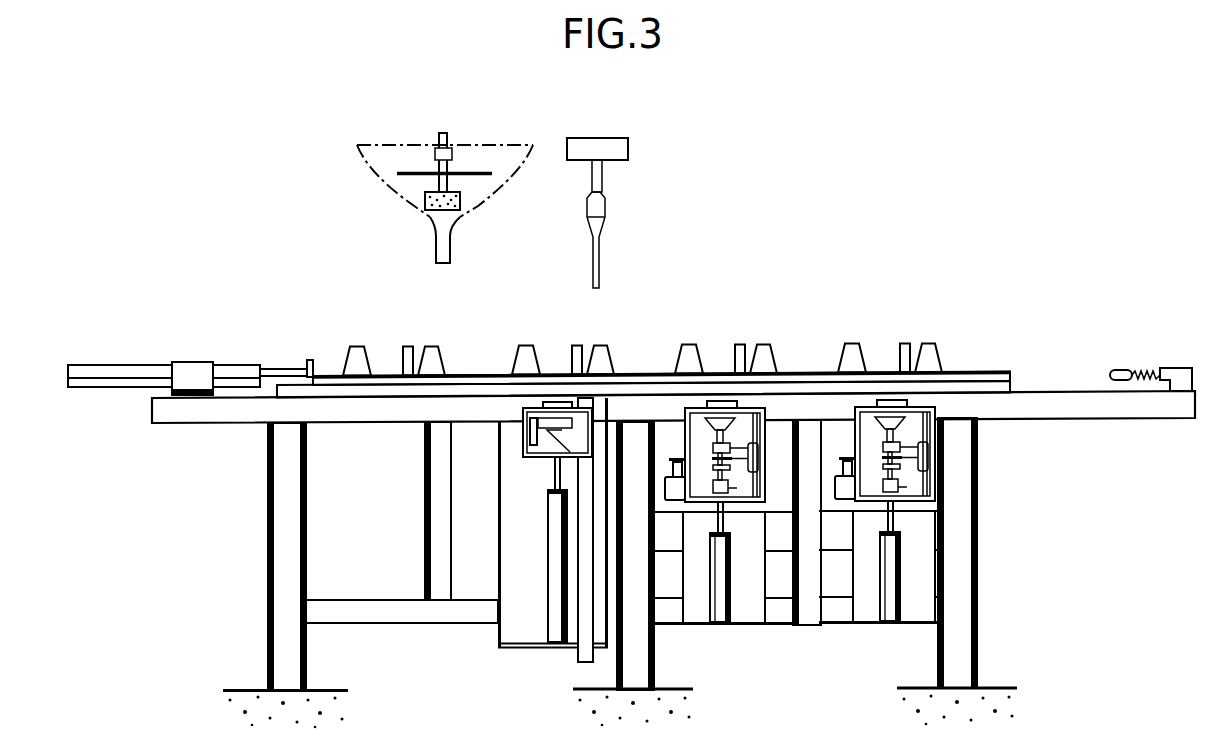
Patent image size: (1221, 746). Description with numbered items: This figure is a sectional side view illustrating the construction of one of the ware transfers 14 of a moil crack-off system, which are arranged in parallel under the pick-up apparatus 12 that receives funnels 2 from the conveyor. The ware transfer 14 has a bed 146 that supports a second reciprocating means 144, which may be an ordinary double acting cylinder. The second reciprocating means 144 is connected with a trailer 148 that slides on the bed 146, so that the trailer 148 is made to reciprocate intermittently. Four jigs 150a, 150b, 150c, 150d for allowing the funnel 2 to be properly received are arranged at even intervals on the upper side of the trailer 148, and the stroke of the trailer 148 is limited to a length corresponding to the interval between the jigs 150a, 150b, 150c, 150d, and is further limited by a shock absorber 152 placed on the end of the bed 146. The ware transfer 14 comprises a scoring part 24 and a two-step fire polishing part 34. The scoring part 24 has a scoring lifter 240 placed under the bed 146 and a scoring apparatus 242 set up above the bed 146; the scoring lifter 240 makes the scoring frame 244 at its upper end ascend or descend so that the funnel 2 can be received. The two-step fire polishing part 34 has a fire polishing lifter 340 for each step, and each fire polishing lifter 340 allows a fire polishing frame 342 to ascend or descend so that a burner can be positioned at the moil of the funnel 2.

The funnel 2 is at (382, 176).
The pick-up apparatus 12 is at (388, 211).
The scoring apparatus 242 is at (628, 150).
The ware transfer 14 is at (242, 537).
The second reciprocating means 144 is at (108, 367).
The bed 146 is at (203, 418).
The trailer 148 is at (645, 374).
The jig 150a is at (388, 360).
The jig 150b is at (555, 358).
The jig 150c is at (722, 358).
The jig 150d is at (882, 358).
The shock absorber 152 is at (1175, 368).
The scoring part 24 is at (556, 668).
The scoring lifter 240 is at (557, 618).
The scoring frame 244 is at (522, 410).
The two-step fire polishing part 34 is at (761, 644).
The fire polishing lifter 340 is at (716, 612).
The fire polishing frame 342 is at (766, 411).